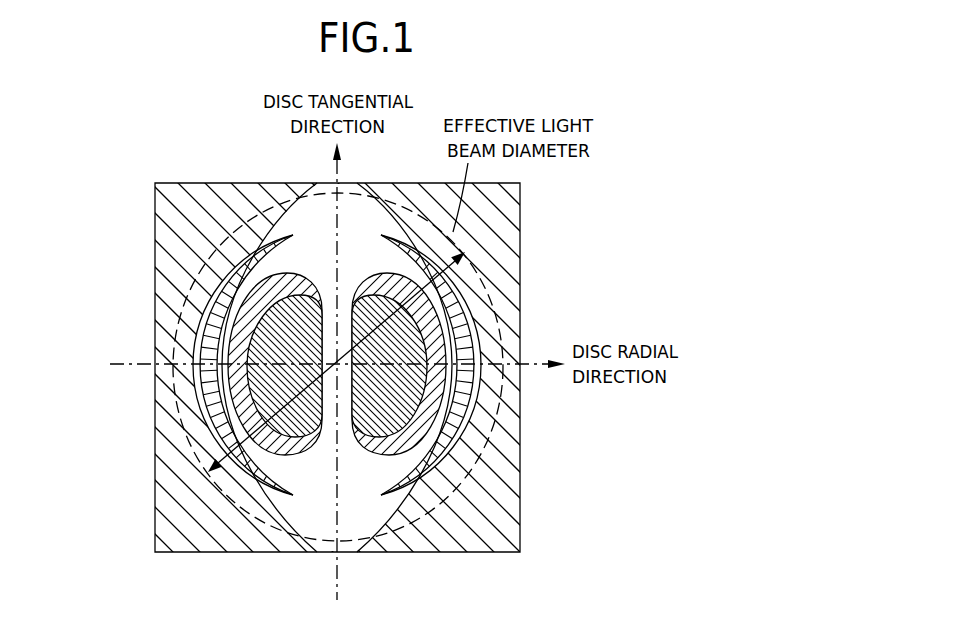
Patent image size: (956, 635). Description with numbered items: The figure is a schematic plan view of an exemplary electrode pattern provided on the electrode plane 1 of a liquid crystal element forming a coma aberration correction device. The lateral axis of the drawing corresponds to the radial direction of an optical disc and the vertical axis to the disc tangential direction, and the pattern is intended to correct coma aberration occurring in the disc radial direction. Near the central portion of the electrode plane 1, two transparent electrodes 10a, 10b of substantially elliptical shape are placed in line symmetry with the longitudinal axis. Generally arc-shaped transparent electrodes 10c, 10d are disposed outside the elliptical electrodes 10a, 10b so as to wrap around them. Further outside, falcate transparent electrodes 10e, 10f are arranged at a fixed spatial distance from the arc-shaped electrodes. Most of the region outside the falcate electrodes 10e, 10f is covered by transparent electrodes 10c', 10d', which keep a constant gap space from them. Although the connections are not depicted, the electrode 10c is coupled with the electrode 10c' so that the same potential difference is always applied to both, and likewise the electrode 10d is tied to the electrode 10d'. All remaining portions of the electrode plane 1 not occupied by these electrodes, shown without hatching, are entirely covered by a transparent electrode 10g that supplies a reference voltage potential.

The electrode plane 1 is at (520, 210).
The transparent electrode 10a is at (284, 342).
The transparent electrode 10b is at (390, 342).
The arc-shaped transparent electrode 10c is at (274, 364).
The arc-shaped transparent electrode 10d is at (394, 364).
The falcate transparent electrode 10e is at (264, 240).
The falcate transparent electrode 10f is at (405, 483).
The transparent electrode 10g is at (317, 467).
The transparent electrode 10c' is at (470, 458).
The transparent electrode 10d' is at (204, 458).